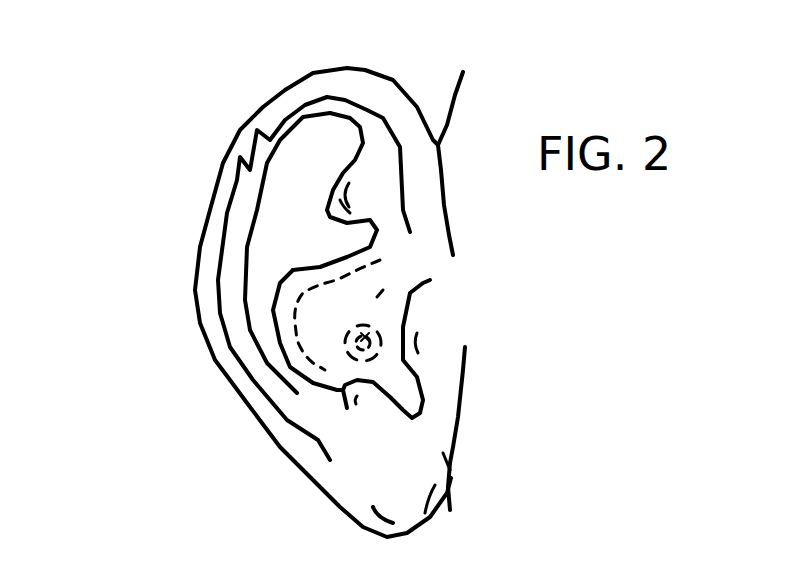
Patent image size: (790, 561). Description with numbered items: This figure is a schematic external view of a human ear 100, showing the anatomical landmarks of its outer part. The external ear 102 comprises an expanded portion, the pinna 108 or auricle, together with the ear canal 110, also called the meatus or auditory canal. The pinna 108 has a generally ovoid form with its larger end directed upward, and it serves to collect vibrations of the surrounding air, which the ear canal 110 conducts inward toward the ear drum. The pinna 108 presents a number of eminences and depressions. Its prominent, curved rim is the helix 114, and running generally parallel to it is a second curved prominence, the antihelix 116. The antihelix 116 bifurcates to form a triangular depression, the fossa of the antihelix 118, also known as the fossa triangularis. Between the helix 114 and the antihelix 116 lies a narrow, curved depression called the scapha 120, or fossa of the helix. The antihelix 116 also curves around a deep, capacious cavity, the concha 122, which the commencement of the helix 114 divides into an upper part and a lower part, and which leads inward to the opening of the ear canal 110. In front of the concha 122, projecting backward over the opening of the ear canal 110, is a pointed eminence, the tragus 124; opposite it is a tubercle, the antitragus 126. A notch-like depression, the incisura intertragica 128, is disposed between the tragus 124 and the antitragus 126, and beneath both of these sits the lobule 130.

The ear 100 is at (150, 299).
The external ear 102 is at (216, 443).
The pinna 108 is at (328, 155).
The ear canal 110 is at (367, 337).
The helix 114 is at (240, 155).
The antihelix 116 is at (273, 218).
The fossa of the antihelix 118 is at (367, 190).
The scapha 120 is at (248, 192).
The concha 122 is at (330, 300).
The tragus 124 is at (427, 340).
The antitragus 126 is at (367, 397).
The incisura intertragica 128 is at (410, 395).
The lobule 130 is at (407, 497).